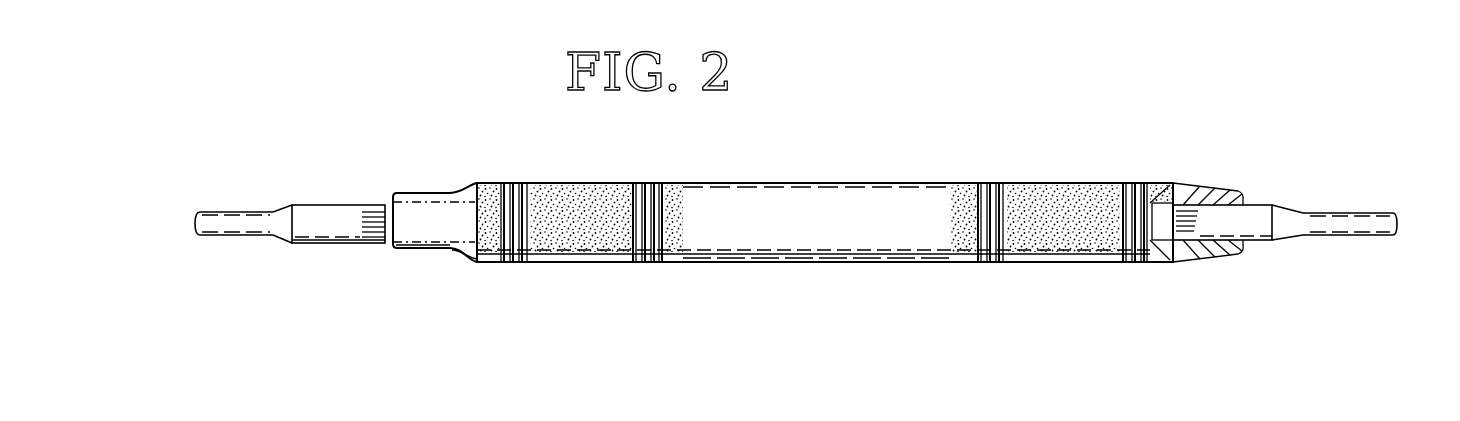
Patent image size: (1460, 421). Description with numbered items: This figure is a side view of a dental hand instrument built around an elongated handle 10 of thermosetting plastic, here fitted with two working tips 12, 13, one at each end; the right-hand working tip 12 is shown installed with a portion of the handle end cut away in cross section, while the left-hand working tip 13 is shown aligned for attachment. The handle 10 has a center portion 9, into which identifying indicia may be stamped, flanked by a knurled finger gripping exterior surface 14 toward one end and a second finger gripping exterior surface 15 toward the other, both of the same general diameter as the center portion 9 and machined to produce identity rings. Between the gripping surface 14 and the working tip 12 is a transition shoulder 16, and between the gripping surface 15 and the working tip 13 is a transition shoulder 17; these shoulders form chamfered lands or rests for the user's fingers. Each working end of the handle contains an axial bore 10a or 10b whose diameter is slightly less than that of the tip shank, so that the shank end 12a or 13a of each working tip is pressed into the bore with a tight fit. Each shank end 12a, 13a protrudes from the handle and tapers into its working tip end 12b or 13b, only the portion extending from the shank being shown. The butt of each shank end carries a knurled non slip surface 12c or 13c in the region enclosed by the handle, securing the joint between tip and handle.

The center portion 9 is at (827, 263).
The handle 10 is at (847, 158).
The axial bore 10a is at (1160, 233).
The axial bore 10b is at (443, 213).
The working tip 12 is at (1306, 218).
The shank end 12a is at (1262, 243).
The working tip end 12b is at (1373, 212).
The non slip surface 12c is at (1195, 227).
The working tip 13 is at (300, 210).
The shank end 13a is at (340, 243).
The working tip end 13b is at (222, 212).
The non slip surface 13c is at (373, 202).
The finger gripping exterior surface 14 is at (1068, 263).
The second finger gripping exterior surface 15 is at (598, 263).
The transition shoulder 16 is at (1190, 247).
The transition shoulder 17 is at (452, 252).